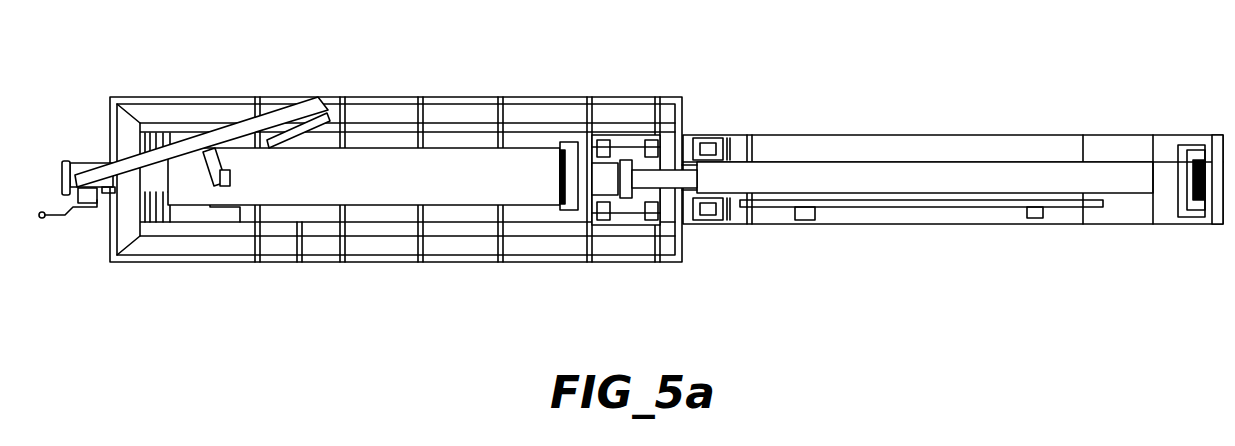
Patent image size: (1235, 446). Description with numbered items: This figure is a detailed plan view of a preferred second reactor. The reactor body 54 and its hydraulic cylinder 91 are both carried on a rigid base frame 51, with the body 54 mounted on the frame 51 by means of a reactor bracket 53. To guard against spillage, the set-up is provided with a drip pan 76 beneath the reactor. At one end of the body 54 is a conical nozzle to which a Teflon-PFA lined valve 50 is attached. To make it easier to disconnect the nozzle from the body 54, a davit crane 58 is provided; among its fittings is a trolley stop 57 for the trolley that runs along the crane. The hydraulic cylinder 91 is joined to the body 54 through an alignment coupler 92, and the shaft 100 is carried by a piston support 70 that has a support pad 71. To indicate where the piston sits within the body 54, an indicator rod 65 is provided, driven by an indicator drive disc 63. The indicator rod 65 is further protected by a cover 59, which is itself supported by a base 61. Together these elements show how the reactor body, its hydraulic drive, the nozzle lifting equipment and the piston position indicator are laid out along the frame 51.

The Teflon-PFA lined valve 50 is at (75, 160).
The rigid base frame 51 is at (1003, 133).
The reactor bracket 53 is at (158, 218).
The reactor body 54 is at (390, 177).
The trolley stop 57 is at (225, 183).
The davit crane 58 is at (233, 130).
The cover 59 is at (992, 207).
The base 61 is at (815, 220).
The indicator drive disc 63 is at (638, 145).
The indicator rod 65 is at (1130, 198).
The piston support 70 is at (605, 212).
The support pad 71 is at (618, 208).
The drip pan 76 is at (385, 262).
The hydraulic cylinder 91 is at (885, 175).
The alignment coupler 92 is at (560, 140).
The shaft 100 is at (688, 142).